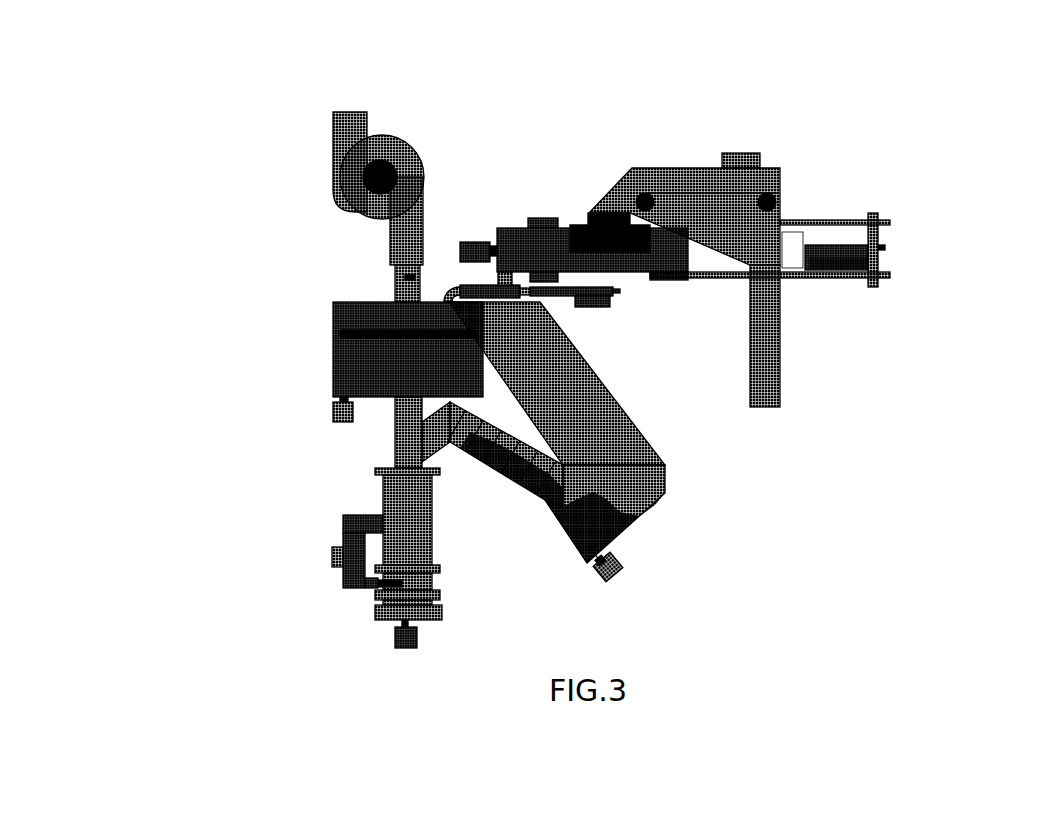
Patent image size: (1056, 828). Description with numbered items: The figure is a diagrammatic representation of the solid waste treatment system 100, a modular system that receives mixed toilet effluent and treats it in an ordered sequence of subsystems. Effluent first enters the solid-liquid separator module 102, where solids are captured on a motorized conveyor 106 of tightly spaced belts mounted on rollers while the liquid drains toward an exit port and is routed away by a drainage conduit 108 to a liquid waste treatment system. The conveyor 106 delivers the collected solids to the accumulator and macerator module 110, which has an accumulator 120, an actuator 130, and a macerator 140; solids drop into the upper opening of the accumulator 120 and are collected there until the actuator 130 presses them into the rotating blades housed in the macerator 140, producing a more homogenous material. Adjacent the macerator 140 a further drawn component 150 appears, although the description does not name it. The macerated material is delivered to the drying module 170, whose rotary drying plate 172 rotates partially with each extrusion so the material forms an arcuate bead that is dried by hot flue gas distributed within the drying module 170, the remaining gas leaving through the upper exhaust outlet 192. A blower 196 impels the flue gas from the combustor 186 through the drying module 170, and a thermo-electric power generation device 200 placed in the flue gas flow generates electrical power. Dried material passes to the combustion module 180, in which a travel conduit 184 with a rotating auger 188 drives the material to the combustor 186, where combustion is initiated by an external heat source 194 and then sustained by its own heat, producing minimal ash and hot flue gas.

The solid waste treatment system 100 is at (235, 149).
The solid-liquid separator module 102 is at (791, 150).
The motorized conveyor 106 is at (697, 190).
The drainage conduit 108 is at (782, 378).
The accumulator and macerator module 110 is at (949, 254).
The accumulator 120 is at (578, 218).
The actuator 130 is at (840, 281).
The macerator 140 is at (517, 228).
The blade 150 is at (643, 304).
The drying module 170 is at (312, 323).
The rotary drying plate 172 is at (340, 340).
The combustion module 180 is at (305, 633).
The travel conduit 184 is at (535, 523).
The combustor 186 is at (354, 490).
The rotating auger 188 is at (492, 472).
The upper exhaust outlet 192 is at (402, 292).
The external heat source 194 is at (332, 557).
The blower 196 is at (386, 146).
The thermo-electric power generation device 200 is at (410, 277).